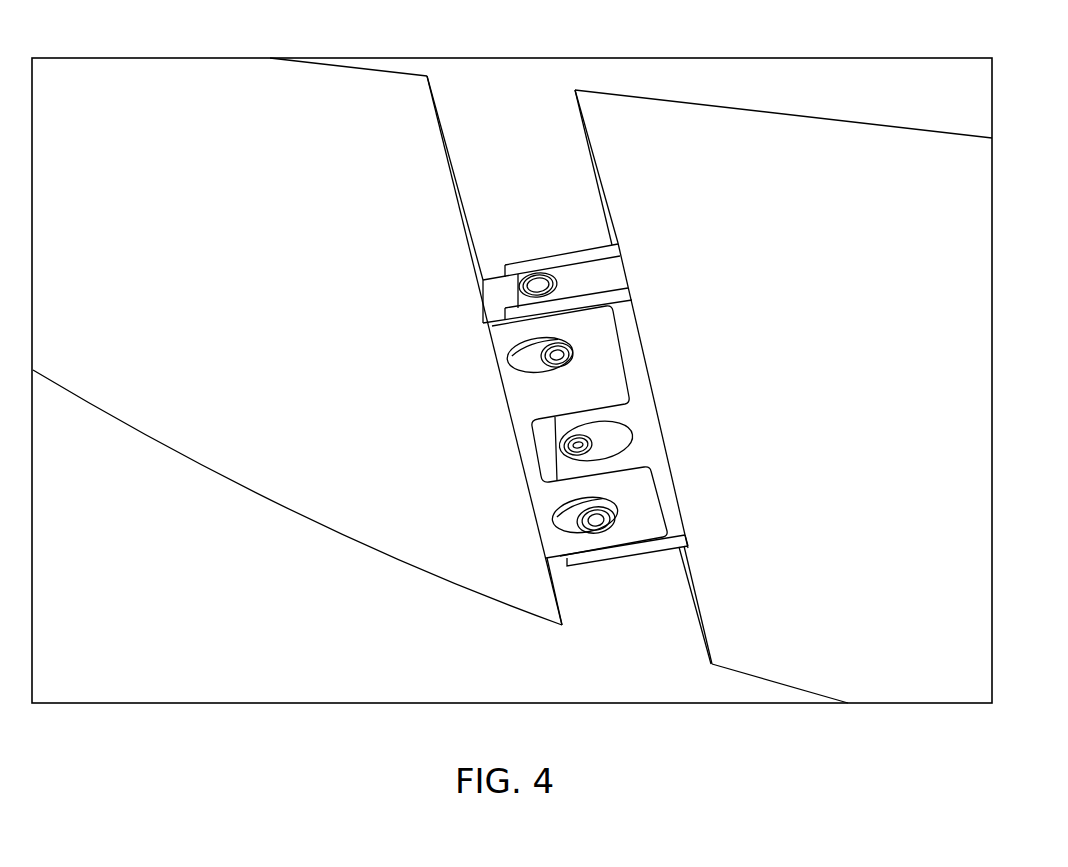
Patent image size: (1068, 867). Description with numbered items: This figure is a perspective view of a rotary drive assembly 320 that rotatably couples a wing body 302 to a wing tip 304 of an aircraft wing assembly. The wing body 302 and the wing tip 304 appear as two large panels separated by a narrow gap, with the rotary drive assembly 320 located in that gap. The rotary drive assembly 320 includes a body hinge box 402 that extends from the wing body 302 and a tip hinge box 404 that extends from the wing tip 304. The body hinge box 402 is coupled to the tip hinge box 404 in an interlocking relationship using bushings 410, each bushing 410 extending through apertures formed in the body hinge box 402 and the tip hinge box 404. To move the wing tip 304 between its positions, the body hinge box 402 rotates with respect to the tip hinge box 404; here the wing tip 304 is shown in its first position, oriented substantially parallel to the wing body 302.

The wing body 302 is at (958, 297).
The wing tip 304 is at (233, 83).
The rotary drive assembly 320 is at (537, 205).
The body hinge box 402 is at (600, 275).
The tip hinge box 404 is at (557, 538).
The bushing 410 is at (538, 283).